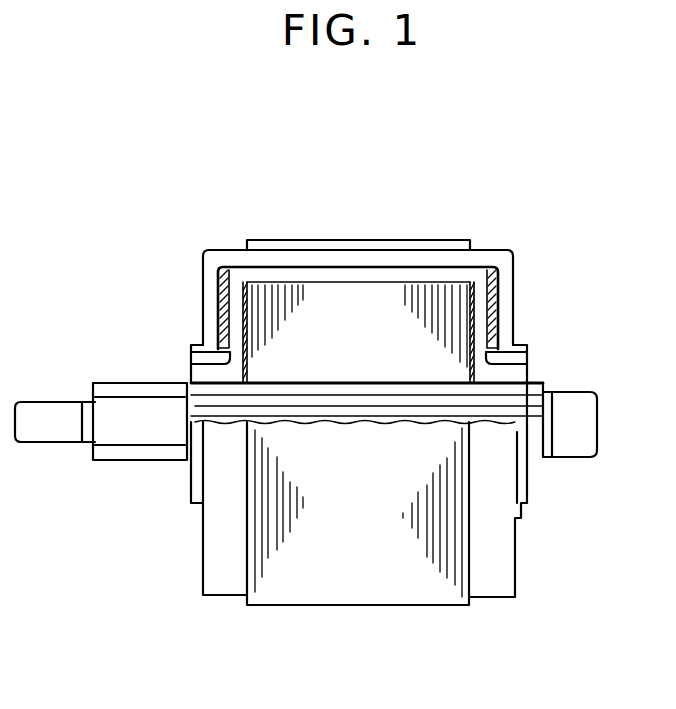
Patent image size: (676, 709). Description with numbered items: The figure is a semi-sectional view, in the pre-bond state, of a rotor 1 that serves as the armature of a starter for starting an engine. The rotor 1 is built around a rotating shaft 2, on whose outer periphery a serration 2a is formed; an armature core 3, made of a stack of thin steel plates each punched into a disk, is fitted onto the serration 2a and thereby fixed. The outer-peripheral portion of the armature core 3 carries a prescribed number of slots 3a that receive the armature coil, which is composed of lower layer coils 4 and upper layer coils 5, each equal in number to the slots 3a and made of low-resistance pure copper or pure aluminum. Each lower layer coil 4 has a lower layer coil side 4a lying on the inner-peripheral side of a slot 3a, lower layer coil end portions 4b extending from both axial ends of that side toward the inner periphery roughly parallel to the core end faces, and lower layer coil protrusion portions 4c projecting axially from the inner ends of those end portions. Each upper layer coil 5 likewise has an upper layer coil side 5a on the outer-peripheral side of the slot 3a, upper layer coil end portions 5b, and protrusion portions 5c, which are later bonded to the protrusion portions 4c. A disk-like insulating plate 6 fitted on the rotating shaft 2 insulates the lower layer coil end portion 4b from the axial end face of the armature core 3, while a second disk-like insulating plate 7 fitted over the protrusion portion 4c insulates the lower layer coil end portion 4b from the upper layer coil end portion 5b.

The rotor 1 is at (490, 223).
The rotating shaft 2 is at (138, 460).
The serration 2a is at (437, 405).
The armature core 3 is at (364, 603).
The slots 3a is at (435, 247).
The lower layer coil 4 is at (290, 255).
The lower layer coil side 4a is at (377, 273).
The lower layer coil end portion 4b is at (232, 305).
The lower layer coil protrusion portion 4c is at (192, 361).
The upper layer coil 5 is at (228, 241).
The upper layer coil side 5a is at (327, 257).
The upper layer coil end portion 5b is at (209, 270).
The upper layer coil protrusion portion 5c is at (195, 345).
The disk-like insulating plate 6 is at (473, 339).
The disk-like insulating plate 7 is at (493, 308).